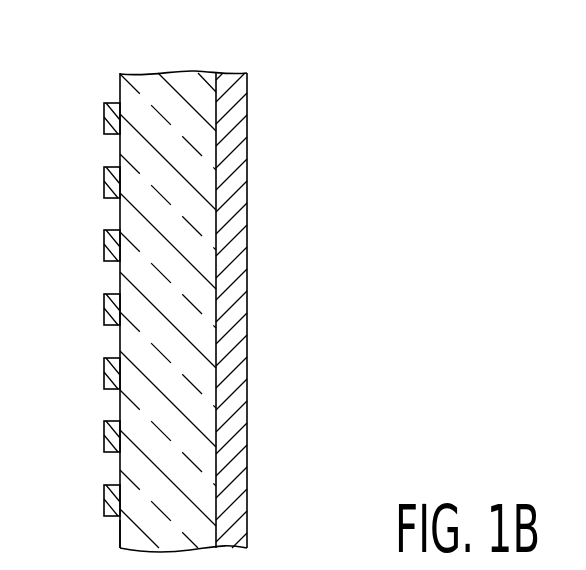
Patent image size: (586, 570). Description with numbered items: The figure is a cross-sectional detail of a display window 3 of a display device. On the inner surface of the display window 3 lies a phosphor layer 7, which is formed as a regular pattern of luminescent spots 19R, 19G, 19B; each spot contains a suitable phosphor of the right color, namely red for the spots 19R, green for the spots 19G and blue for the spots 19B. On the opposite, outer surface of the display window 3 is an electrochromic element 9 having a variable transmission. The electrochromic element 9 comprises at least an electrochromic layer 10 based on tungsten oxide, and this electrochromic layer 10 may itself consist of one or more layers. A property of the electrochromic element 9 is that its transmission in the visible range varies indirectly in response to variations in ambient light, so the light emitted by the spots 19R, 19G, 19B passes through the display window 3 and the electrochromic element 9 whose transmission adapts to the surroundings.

The display window 3 is at (146, 86).
The electrochromic element 9 is at (253, 56).
The electrochromic layer 10 is at (247, 217).
The red luminescent spot 19R is at (104, 124).
The blue luminescent spot 19B is at (104, 188).
The green luminescent spot 19G is at (104, 251).
The phosphor layer 7 is at (120, 539).